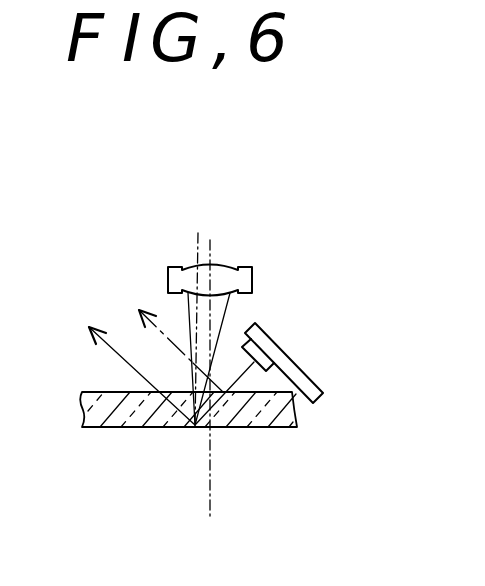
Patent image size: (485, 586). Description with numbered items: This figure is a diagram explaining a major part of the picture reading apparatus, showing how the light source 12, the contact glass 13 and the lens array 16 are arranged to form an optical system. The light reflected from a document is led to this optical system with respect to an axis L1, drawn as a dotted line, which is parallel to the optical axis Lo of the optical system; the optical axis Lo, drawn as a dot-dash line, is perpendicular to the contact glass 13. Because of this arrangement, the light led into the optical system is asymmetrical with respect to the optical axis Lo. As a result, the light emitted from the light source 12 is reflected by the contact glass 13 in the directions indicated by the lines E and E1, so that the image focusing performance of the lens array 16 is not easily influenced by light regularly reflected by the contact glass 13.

The light source 12 is at (302, 368).
The contact glass 13 is at (274, 427).
The lens array 16 is at (226, 262).
The axis L1 is at (197, 427).
The optical axis Lo is at (213, 400).
The line indicating direction of reflected light E is at (167, 328).
The line indicating direction of reflected light E1 is at (114, 359).